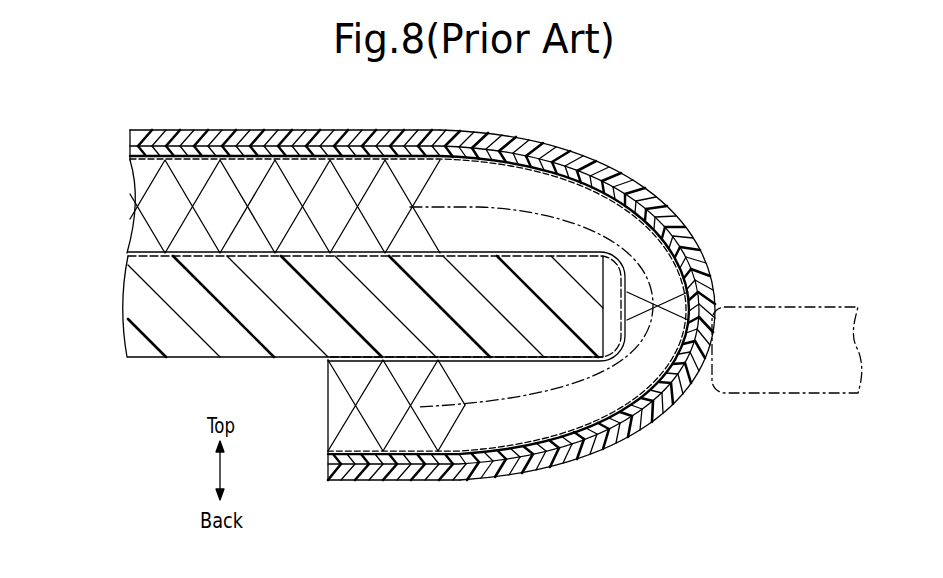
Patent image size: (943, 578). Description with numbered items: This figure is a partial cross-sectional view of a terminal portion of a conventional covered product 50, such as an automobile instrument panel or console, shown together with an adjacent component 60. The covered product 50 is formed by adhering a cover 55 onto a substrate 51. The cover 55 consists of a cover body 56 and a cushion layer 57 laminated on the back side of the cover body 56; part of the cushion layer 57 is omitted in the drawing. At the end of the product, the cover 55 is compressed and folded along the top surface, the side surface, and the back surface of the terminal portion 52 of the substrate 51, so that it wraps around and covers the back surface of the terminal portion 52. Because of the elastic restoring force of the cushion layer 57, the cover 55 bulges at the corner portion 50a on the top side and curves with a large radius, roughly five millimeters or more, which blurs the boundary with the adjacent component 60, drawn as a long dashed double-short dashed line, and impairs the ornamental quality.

The covered product 50 is at (166, 121).
The corner portion 50a is at (638, 184).
The substrate 51 is at (168, 372).
The terminal portion 52 is at (503, 350).
The cover 55 is at (364, 301).
The cover body 56 is at (143, 139).
The cushion layer 57 is at (140, 188).
The adjacent component 60 is at (798, 307).